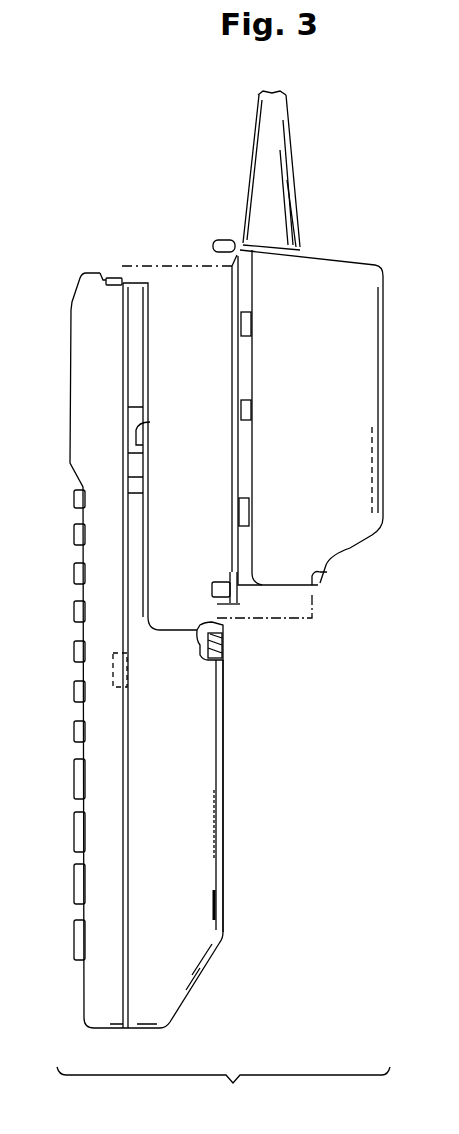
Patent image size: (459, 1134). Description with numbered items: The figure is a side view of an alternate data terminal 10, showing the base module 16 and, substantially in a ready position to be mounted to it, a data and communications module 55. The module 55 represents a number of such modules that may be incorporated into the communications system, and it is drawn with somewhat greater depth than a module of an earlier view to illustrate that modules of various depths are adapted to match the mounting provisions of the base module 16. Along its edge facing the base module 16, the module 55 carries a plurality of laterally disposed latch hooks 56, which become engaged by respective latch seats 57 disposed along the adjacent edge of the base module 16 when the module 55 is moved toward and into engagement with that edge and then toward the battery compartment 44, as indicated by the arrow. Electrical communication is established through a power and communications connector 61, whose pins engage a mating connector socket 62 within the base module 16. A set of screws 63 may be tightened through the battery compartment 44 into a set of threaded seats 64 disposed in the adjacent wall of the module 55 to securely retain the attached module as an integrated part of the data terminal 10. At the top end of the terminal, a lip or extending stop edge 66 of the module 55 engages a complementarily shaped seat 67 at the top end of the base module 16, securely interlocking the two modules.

The data terminal 10 is at (73, 965).
The base module 16 is at (103, 727).
The battery compartment 44 is at (218, 780).
The data and communications module 55 is at (335, 284).
The latch hooks 56 is at (250, 413).
The latch seats 57 is at (150, 422).
The power and communications connector 61 is at (235, 606).
The connector socket 62 is at (127, 678).
The screws 63 is at (222, 657).
The threaded seats 64 is at (332, 572).
The stop edge 66 is at (160, 614).
The seat 67 is at (111, 277).